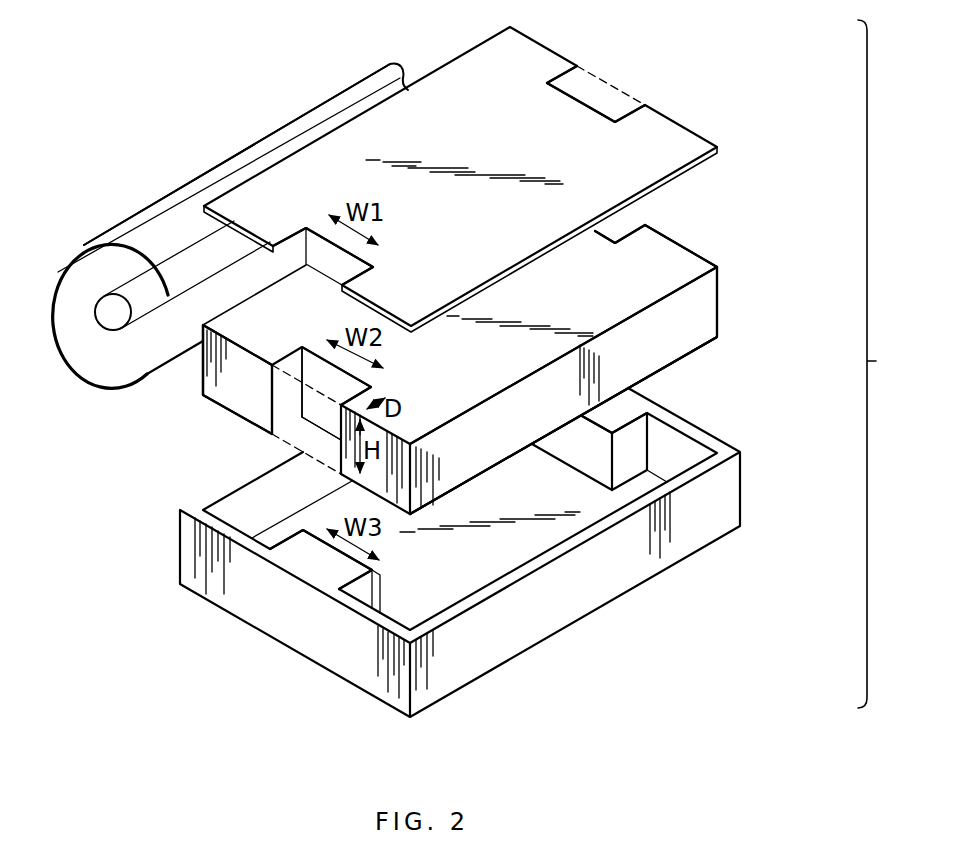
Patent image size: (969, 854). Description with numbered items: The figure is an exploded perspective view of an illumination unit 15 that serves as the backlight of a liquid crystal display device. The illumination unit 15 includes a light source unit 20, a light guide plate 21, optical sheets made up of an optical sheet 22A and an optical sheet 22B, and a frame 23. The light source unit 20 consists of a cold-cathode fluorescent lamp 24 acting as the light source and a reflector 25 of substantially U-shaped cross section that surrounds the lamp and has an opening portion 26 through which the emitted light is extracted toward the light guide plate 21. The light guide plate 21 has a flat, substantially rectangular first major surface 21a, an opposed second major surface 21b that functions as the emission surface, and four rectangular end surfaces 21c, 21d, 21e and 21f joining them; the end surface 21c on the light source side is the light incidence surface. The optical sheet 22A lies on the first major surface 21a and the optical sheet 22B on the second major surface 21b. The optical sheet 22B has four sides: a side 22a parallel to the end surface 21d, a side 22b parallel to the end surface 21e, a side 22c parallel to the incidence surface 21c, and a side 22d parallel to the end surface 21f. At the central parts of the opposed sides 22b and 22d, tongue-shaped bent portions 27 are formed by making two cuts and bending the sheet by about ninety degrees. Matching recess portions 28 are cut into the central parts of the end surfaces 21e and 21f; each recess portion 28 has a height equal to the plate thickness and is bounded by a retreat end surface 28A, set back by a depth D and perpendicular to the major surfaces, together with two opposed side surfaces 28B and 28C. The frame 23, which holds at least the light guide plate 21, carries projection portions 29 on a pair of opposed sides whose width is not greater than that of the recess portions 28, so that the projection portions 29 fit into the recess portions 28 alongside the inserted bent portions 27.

The illumination unit 15 is at (882, 364).
The light source unit 20 is at (162, 153).
The light guide plate 21 is at (768, 256).
The first major surface 21a is at (710, 343).
The second major surface 21b is at (615, 312).
The end surface 21c is at (200, 372).
The end surface 21d is at (712, 312).
The end surface 21e is at (712, 257).
The end surface 21f is at (243, 400).
The optical sheet 22A is at (478, 557).
The optical sheet 22B is at (463, 68).
The side 22a is at (697, 163).
The side 22b is at (678, 120).
The side 22c is at (355, 112).
The side 22d is at (250, 230).
The frame 23 is at (770, 487).
The cold-cathode fluorescent lamp 24 is at (107, 315).
The reflector 25 is at (146, 218).
The opening portion 26 is at (175, 324).
The bent portion 27 is at (330, 262).
The recess portion 28 is at (293, 400).
The retreat end surface 28A is at (322, 405).
The side surface 28B is at (290, 360).
The side surface 28C is at (362, 387).
The projection portion 29 is at (305, 570).